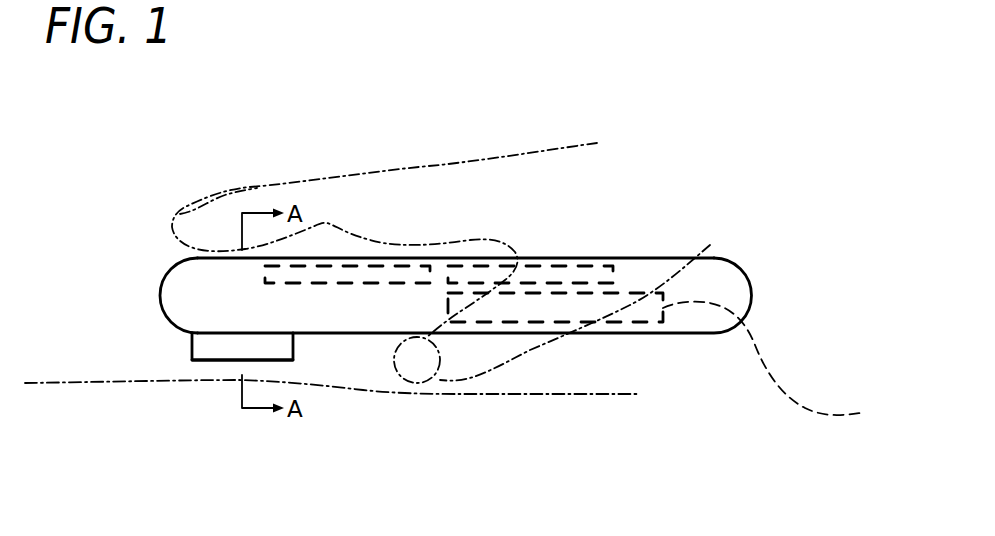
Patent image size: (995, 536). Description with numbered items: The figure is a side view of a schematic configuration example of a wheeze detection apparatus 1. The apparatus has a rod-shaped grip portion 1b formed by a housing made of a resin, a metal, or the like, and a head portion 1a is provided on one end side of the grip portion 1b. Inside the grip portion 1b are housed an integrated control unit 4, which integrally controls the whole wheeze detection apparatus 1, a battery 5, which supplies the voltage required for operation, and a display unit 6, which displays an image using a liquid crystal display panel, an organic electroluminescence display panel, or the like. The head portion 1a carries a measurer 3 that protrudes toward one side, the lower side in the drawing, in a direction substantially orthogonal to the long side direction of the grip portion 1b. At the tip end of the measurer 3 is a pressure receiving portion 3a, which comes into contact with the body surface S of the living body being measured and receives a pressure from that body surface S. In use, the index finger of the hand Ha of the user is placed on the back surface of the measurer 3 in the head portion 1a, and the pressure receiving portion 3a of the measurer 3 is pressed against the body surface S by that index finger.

The wheeze detection apparatus 1 is at (469, 313).
The head portion 1a is at (188, 288).
The grip portion 1b is at (561, 257).
The measurer 3 is at (226, 414).
The pressure receiving portion 3a is at (213, 362).
The integrated control unit 4 is at (610, 286).
The battery 5 is at (772, 363).
The display unit 6 is at (357, 286).
The hand Ha is at (341, 173).
The body surface S is at (72, 383).